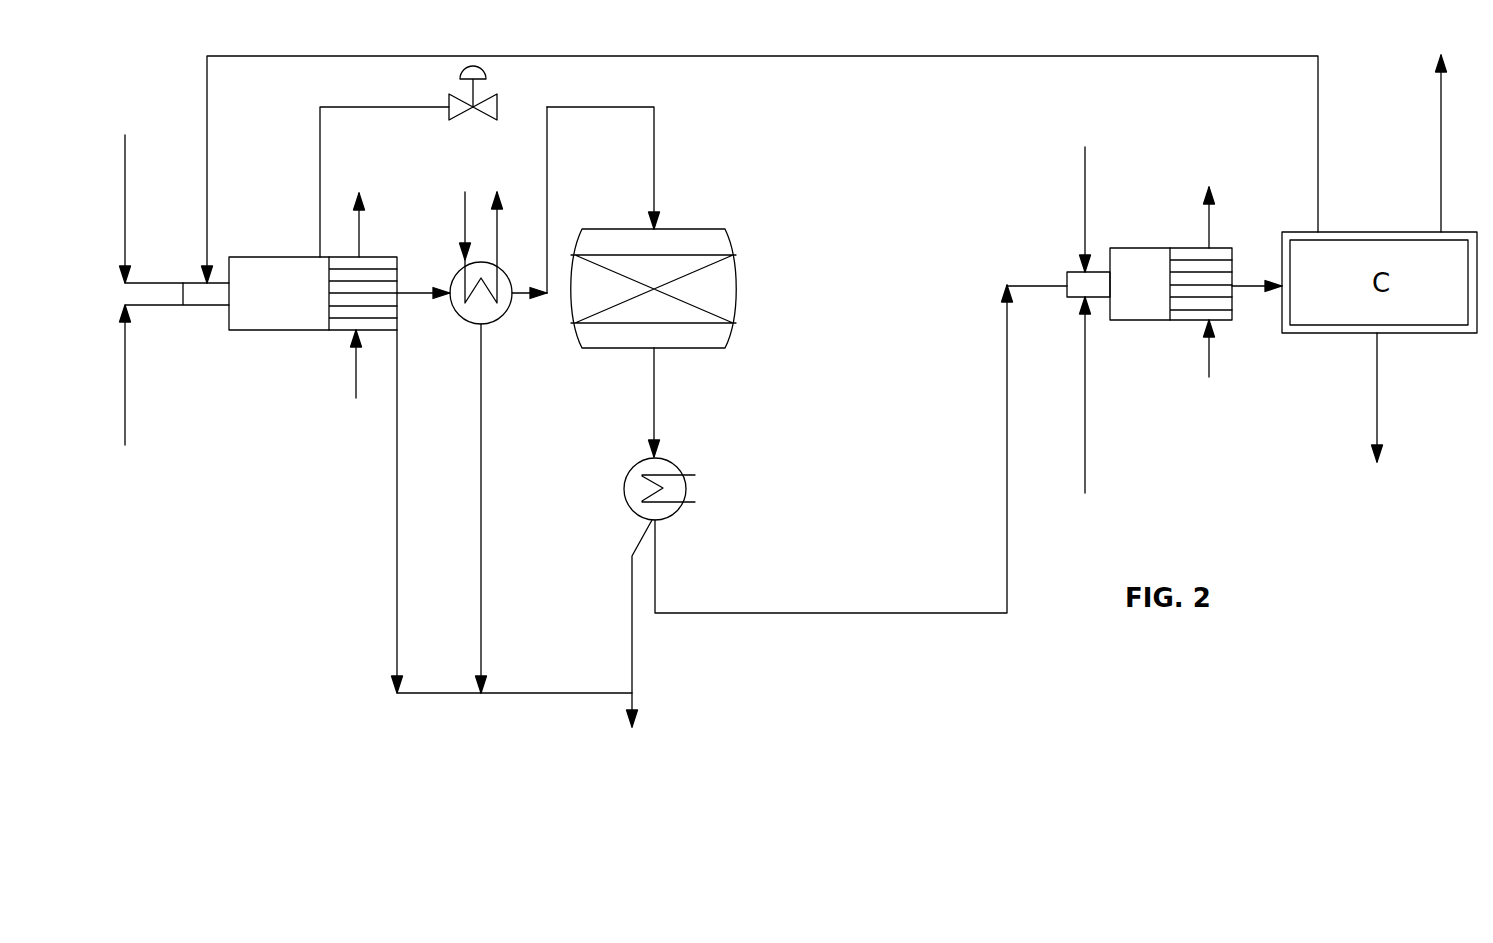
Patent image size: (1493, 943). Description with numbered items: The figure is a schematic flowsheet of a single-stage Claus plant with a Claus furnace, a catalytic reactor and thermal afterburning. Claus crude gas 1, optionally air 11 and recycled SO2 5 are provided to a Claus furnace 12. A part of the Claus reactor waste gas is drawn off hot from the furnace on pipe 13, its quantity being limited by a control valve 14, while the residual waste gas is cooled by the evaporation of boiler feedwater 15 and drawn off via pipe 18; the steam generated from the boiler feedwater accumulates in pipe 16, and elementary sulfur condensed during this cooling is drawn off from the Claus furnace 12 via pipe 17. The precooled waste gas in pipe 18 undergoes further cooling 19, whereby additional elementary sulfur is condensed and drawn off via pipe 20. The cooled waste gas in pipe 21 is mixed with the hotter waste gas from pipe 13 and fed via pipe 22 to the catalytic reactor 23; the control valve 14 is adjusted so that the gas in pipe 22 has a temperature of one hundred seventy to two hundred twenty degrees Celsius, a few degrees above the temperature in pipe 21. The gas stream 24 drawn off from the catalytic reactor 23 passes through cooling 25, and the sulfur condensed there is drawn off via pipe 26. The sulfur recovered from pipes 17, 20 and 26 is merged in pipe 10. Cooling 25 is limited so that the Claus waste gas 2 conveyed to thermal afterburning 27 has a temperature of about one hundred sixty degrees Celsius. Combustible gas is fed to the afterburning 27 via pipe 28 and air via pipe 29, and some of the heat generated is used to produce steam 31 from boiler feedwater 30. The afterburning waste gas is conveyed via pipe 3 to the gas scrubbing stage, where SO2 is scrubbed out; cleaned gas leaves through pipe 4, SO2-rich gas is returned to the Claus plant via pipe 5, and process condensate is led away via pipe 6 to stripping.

The Claus crude gas 1 is at (125, 404).
The Claus waste gas 2 is at (838, 612).
The waste gas pipe from afterburning 3 is at (1245, 280).
The cleaned gas pipe 4 is at (1441, 150).
The recycled SO2 pipe 5 is at (207, 170).
The process condensate pipe 6 is at (1377, 390).
The elementary sulfur pipe 10 is at (632, 700).
The air 11 is at (125, 182).
The Claus furnace 12 is at (300, 311).
The hot waste gas pipe 13 is at (320, 212).
The control valve 14 is at (473, 109).
The boiler feedwater 15 is at (356, 380).
The steam pipe 16 is at (362, 211).
The sulfur drain pipe from furnace 17 is at (397, 560).
The precooled waste gas pipe 18 is at (412, 290).
The cooling 19 is at (470, 324).
The sulfur drain pipe from cooling 20 is at (481, 560).
The cooled waste gas pipe 21 is at (547, 178).
The catalytic reactor feed pipe 22 is at (654, 160).
The catalytic reactor 23 is at (742, 290).
The catalytic reactor outlet gas stream 24 is at (656, 410).
The cooling 25 is at (624, 485).
The sulfur drain pipe from cooling 25 26 is at (632, 625).
The thermal afterburning 27 is at (1118, 301).
The combustible gas pipe 28 is at (1085, 445).
The air pipe 29 is at (1085, 210).
The boiler feedwater 30 is at (1207, 368).
The steam 31 is at (1207, 199).